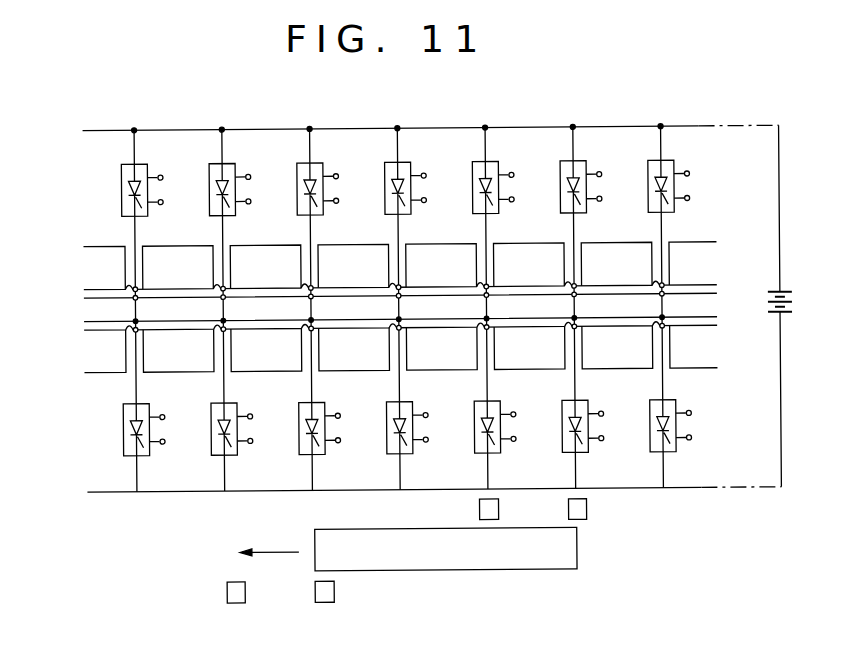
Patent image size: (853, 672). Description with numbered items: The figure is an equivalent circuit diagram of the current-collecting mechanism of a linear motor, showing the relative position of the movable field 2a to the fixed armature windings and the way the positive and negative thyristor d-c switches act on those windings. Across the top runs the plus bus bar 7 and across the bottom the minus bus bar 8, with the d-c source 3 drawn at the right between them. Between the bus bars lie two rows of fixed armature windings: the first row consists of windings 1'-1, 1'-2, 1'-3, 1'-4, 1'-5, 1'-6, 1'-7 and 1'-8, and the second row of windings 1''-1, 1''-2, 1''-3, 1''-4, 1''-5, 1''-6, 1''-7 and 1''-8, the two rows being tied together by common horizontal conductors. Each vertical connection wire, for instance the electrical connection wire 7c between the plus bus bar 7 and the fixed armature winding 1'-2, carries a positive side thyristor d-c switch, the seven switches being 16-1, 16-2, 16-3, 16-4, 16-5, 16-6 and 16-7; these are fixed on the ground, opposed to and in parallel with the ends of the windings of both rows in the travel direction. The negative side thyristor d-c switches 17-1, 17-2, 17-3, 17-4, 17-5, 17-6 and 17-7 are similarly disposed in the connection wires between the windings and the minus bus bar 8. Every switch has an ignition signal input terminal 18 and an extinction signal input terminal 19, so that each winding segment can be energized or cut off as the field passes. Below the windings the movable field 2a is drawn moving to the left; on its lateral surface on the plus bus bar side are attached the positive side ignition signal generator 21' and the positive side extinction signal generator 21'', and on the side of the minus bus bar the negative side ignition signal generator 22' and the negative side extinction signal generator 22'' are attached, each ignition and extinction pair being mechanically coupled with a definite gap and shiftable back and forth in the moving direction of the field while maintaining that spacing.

The plus bus bar 7 is at (617, 128).
The minus bus bar 8 is at (672, 490).
The d-c source 3 is at (794, 305).
The electrical connection wire 7c is at (574, 235).
The positive side thyristor d-c switch 16-1 is at (679, 171).
The positive side thyristor d-c switch 16-2 is at (591, 171).
The positive side thyristor d-c switch 16-3 is at (503, 172).
The positive side thyristor d-c switch 16-4 is at (415, 173).
The positive side thyristor d-c switch 16-5 is at (328, 174).
The positive side thyristor d-c switch 16-6 is at (240, 174).
The positive side thyristor d-c switch 16-7 is at (152, 175).
The negative side thyristor d-c switch 17-1 is at (681, 440).
The negative side thyristor d-c switch 17-2 is at (593, 441).
The negative side thyristor d-c switch 17-3 is at (505, 442).
The negative side thyristor d-c switch 17-4 is at (417, 442).
The negative side thyristor d-c switch 17-5 is at (330, 443).
The negative side thyristor d-c switch 17-6 is at (242, 444).
The negative side thyristor d-c switch 17-7 is at (154, 444).
The ignition signal input terminal 18 is at (433, 296).
The extinction signal input terminal 19 is at (434, 320).
The fixed armature winding 1'-1 is at (693, 263).
The fixed armature winding 1'-2 is at (616, 264).
The fixed armature winding 1'-3 is at (528, 265).
The fixed armature winding 1'-4 is at (441, 266).
The fixed armature winding 1'-5 is at (353, 266).
The fixed armature winding 1'-6 is at (265, 267).
The fixed armature winding 1'-7 is at (177, 268).
The fixed armature winding 1'-8 is at (102, 267).
The fixed armature winding 1''-1 is at (694, 346).
The fixed armature winding 1''-2 is at (617, 347).
The fixed armature winding 1''-3 is at (529, 347).
The fixed armature winding 1''-4 is at (441, 348).
The fixed armature winding 1''-5 is at (354, 349).
The fixed armature winding 1''-6 is at (266, 350).
The fixed armature winding 1''-7 is at (178, 350).
The fixed armature winding 1''-8 is at (101, 351).
The movable field 2a is at (513, 570).
The positive side ignition signal generator 21' is at (454, 509).
The positive side extinction signal generator 21'' is at (607, 508).
The negative side ignition signal generator 22' is at (236, 617).
The negative side extinction signal generator 22'' is at (323, 616).